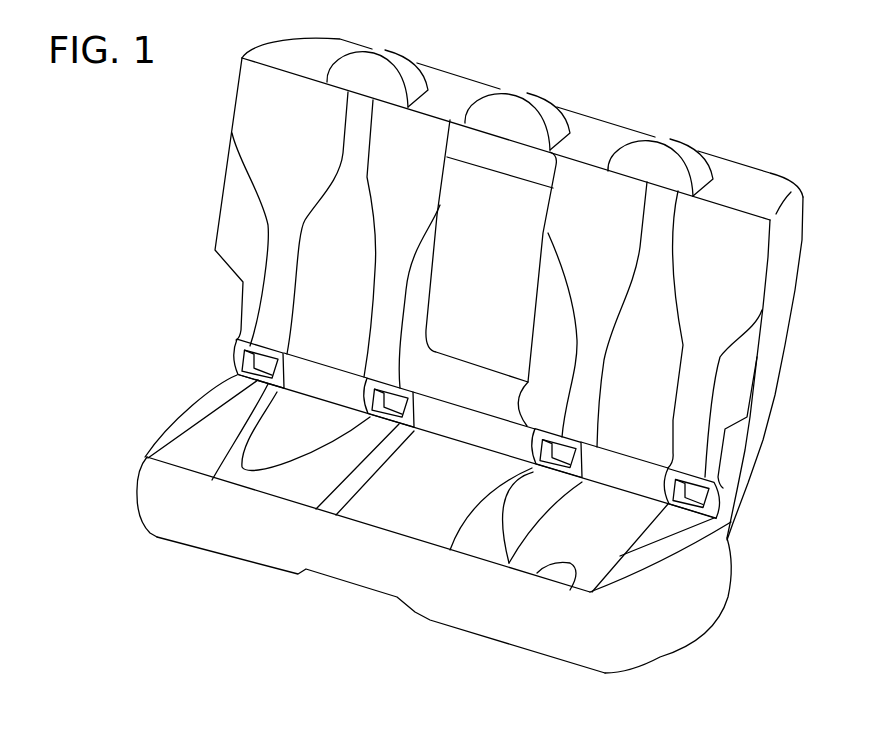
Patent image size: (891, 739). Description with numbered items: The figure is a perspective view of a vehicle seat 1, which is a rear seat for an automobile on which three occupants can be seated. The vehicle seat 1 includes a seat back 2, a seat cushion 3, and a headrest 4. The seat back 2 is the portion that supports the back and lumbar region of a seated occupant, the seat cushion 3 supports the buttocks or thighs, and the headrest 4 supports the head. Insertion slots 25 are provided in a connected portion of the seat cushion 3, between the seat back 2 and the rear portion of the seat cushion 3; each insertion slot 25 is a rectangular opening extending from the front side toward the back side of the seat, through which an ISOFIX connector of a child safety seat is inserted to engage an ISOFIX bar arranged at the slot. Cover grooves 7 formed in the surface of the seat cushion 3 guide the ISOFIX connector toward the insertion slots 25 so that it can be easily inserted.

The vehicle seat 1 is at (808, 118).
The seat back 2 is at (743, 257).
The seat cushion 3 is at (615, 557).
The headrest 4 is at (687, 158).
The cover groove 7 is at (570, 590).
The insertion slot 25 is at (700, 495).